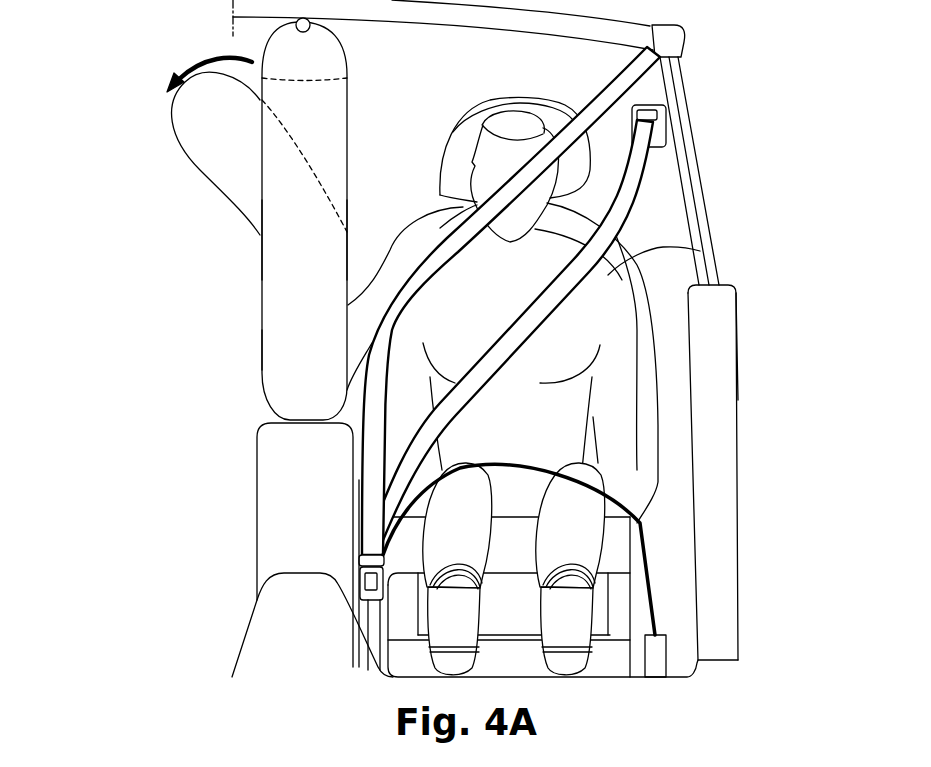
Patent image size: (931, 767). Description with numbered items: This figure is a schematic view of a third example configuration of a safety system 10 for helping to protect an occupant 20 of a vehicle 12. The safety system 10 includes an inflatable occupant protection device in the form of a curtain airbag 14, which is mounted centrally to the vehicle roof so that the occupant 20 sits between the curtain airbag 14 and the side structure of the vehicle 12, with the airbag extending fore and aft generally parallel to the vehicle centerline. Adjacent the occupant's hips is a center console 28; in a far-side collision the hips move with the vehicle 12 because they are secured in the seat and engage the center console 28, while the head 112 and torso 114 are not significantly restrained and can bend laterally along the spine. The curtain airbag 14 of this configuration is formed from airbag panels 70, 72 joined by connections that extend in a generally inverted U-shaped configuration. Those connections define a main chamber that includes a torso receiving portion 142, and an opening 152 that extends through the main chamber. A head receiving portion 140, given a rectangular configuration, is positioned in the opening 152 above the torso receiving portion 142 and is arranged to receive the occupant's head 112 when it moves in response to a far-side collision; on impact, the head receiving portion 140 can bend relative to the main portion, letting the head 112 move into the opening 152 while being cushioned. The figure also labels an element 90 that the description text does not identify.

The safety system 10 is at (155, 22).
The vehicle 12 is at (712, 40).
The curtain airbag 14 is at (297, 272).
The occupant 20 is at (700, 251).
The center console 28 is at (290, 481).
The airbag panel 70 is at (350, 247).
The airbag panel 72 is at (262, 241).
The seat belt 90 is at (527, 165).
The head 112 is at (493, 125).
The torso 114 is at (604, 327).
The head receiving portion 140 is at (227, 132).
The torso receiving portion 142 is at (298, 347).
The opening 152 is at (407, 117).